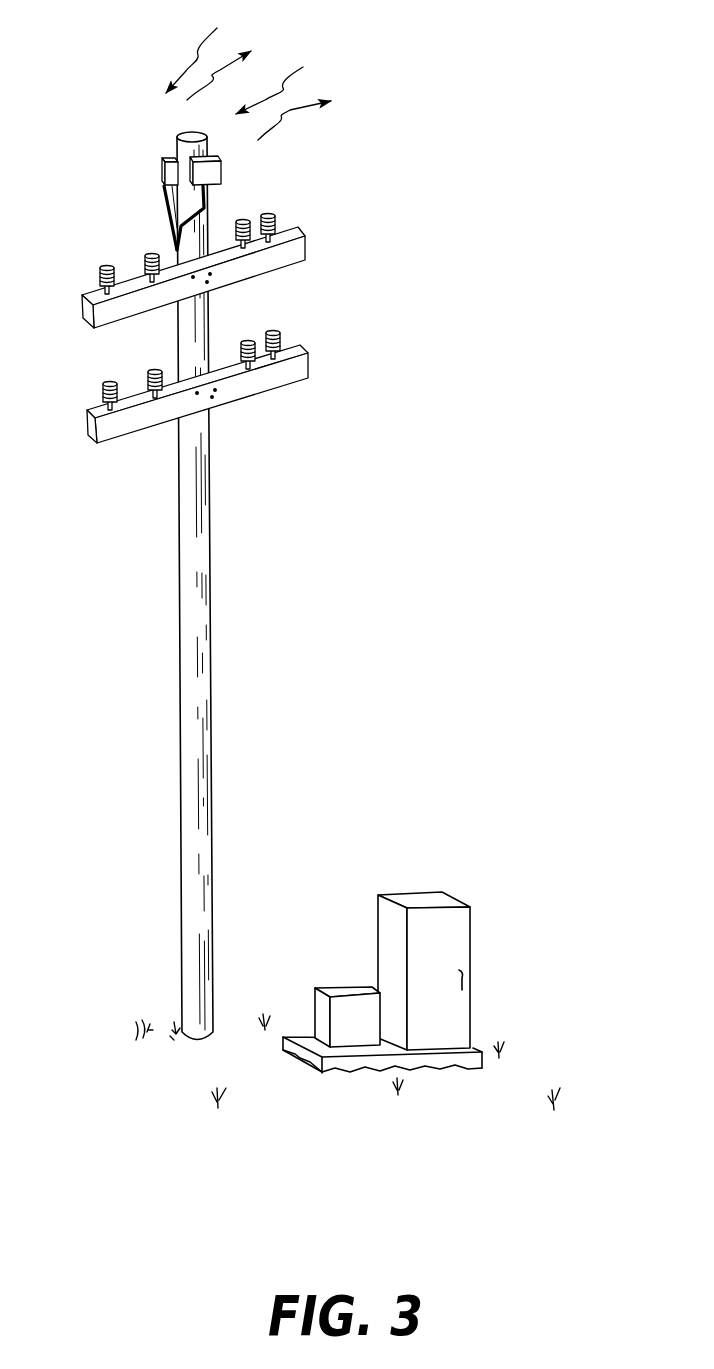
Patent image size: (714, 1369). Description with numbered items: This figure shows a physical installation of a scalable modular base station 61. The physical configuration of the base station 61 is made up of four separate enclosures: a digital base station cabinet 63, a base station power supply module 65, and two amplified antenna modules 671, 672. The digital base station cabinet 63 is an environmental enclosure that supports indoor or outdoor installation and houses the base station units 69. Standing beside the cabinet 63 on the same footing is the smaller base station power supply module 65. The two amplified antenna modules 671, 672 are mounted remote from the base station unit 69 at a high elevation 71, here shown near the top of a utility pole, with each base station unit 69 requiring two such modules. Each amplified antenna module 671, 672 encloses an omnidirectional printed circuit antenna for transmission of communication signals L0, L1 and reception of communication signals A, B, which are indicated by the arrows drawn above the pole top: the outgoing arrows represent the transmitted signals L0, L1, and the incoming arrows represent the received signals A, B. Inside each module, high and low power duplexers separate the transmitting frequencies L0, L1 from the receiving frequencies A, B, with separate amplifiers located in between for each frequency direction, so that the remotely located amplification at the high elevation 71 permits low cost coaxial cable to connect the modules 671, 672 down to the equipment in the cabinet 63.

The scalable modular base station 61 is at (359, 618).
The high elevation 71 is at (180, 590).
The amplified antenna module 671 is at (163, 163).
The amplified antenna module 672 is at (222, 173).
The digital base station cabinet 63 is at (479, 928).
The base station unit 69 is at (458, 951).
The base station power supply module 65 is at (335, 988).
The received communication signal A is at (199, 46).
The received communication signal B is at (282, 79).
The transmitted communication signal L0 is at (238, 57).
The transmitted communication signal L1 is at (315, 104).